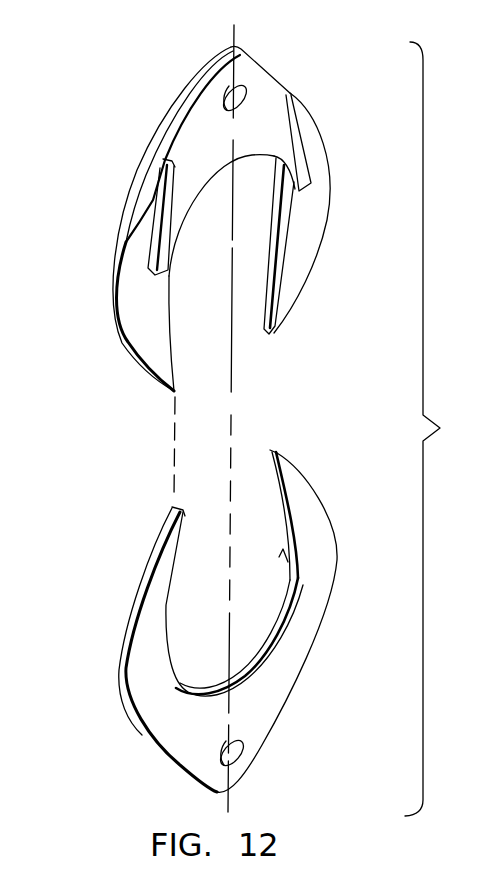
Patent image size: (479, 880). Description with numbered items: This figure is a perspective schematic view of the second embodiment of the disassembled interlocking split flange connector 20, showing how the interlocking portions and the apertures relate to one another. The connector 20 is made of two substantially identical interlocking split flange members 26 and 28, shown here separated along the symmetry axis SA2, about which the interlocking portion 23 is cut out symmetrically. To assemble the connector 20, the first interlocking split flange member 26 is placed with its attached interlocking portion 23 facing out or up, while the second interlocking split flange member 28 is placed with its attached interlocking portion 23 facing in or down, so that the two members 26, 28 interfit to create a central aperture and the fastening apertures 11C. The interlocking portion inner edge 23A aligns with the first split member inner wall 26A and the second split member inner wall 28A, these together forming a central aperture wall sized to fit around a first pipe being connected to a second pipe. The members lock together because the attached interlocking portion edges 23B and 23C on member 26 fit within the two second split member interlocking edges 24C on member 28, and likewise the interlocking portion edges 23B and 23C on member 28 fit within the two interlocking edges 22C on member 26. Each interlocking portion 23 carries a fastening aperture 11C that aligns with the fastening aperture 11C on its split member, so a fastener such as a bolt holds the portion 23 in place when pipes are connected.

The interlocking split flange connector 20 is at (285, 746).
The symmetry axis SA2 is at (234, 378).
The first interlocking split flange member 26 is at (72, 362).
The second interlocking split flange member 28 is at (123, 737).
The interlocking portion 23 is at (271, 99).
The interlocking portion inner edge 23A is at (198, 198).
The interlocking portion edge 23B is at (162, 205).
The interlocking portion edge 23C is at (297, 133).
The first split member inner wall 26A is at (290, 232).
The second split member inner wall 28A is at (265, 655).
The first split member interlocking edges 22C is at (172, 362).
The second split member interlocking edges 24C is at (270, 462).
The fastening aperture 11C is at (223, 86).